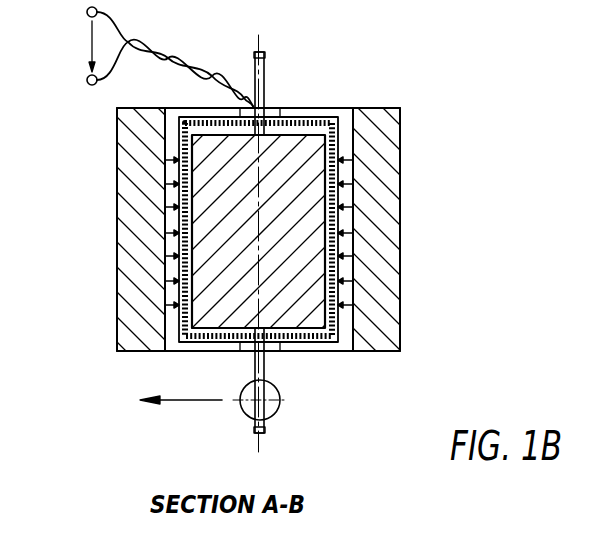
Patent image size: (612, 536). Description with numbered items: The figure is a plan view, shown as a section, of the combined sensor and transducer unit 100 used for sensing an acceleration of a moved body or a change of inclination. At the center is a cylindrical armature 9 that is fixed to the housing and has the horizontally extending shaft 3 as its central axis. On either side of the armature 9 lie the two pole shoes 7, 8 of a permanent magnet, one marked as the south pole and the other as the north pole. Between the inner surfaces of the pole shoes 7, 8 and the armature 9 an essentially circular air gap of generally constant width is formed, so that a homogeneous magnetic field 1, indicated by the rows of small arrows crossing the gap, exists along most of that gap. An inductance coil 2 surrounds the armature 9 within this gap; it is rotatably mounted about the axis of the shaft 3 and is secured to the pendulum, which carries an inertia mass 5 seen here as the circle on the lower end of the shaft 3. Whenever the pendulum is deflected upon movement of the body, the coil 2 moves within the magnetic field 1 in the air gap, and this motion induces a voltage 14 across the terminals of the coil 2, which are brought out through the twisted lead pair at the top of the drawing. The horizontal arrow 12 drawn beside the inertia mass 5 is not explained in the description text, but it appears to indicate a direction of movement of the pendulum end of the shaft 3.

The magnetic field 1 is at (345, 302).
The inductance coil 2 is at (298, 110).
The shaft 3 is at (266, 57).
The inertia mass 5 is at (269, 405).
The pole shoe 7 is at (136, 112).
The pole shoe 8 is at (379, 110).
The armature 9 is at (270, 230).
The direction of motion arrow 12 is at (178, 401).
The induced voltage 14 is at (90, 40).
The sensor and transducer unit 100 is at (98, 322).